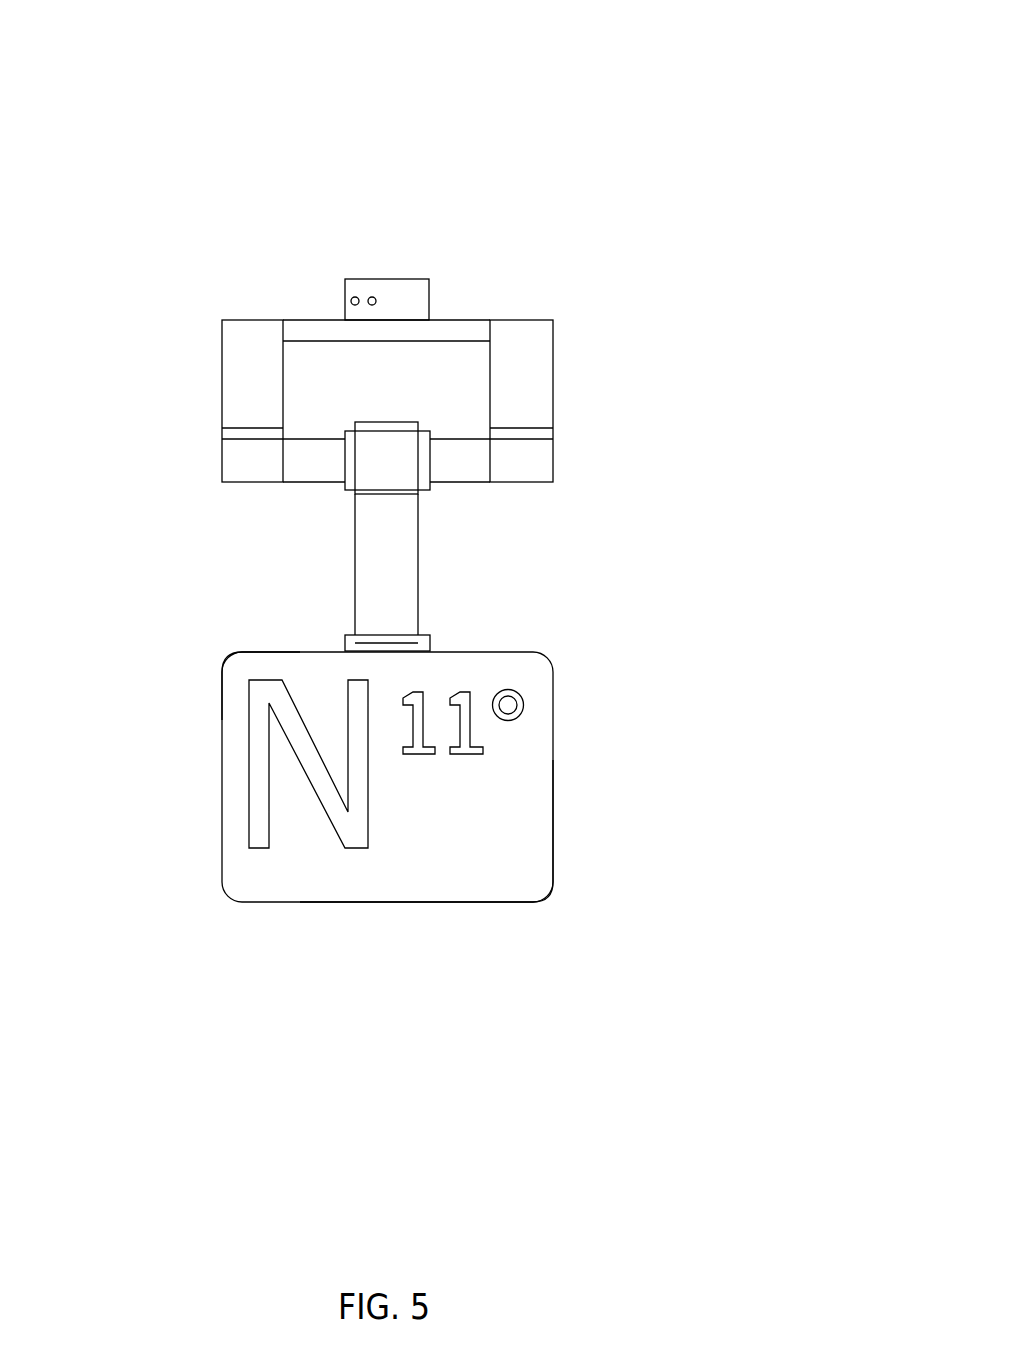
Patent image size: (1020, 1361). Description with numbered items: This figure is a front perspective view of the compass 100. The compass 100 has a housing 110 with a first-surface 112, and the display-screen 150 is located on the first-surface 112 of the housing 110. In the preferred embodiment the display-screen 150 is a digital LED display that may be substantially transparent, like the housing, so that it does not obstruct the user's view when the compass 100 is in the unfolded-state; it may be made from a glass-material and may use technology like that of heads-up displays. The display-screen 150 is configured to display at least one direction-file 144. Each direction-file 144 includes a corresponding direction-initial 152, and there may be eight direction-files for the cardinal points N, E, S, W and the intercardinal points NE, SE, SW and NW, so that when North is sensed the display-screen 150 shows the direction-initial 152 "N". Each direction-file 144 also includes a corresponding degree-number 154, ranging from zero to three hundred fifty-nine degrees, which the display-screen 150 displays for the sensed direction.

The compass 100 is at (748, 32).
The housing 110 is at (549, 658).
The first-surface 112 is at (232, 678).
The direction-file 144 is at (527, 708).
The display-screen 150 is at (507, 869).
The direction-initial 152 is at (258, 778).
The degree-number 154 is at (462, 697).